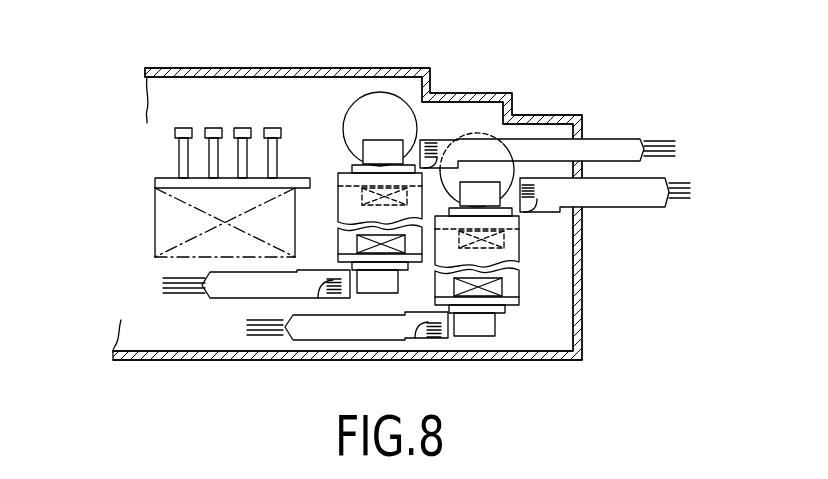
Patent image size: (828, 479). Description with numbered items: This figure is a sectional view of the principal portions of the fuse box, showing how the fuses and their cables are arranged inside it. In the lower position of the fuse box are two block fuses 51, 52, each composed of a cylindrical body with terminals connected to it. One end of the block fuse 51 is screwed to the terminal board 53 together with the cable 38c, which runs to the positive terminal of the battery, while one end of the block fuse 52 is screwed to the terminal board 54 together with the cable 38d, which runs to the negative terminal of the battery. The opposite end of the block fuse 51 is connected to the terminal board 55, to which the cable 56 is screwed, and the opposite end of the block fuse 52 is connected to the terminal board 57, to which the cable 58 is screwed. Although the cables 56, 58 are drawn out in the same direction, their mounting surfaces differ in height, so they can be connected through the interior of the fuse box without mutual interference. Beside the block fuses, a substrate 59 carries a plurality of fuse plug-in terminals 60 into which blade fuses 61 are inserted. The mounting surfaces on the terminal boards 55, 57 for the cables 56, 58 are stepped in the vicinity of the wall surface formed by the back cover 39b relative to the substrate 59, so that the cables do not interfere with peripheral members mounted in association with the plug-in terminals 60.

The cable 38c is at (613, 142).
The cable 38d is at (637, 199).
The back cover 39b is at (583, 328).
The block fuse 51 is at (393, 107).
The block fuse 52 is at (512, 176).
The terminal board 53 is at (347, 177).
The terminal board 54 is at (519, 250).
The terminal board 55 is at (346, 259).
The cable 56 is at (231, 290).
The terminal board 57 is at (513, 300).
The cable 58 is at (312, 336).
The substrate 59 is at (173, 182).
The fuse plug-in terminals 60 is at (167, 225).
The blade fuses 61 is at (229, 116).